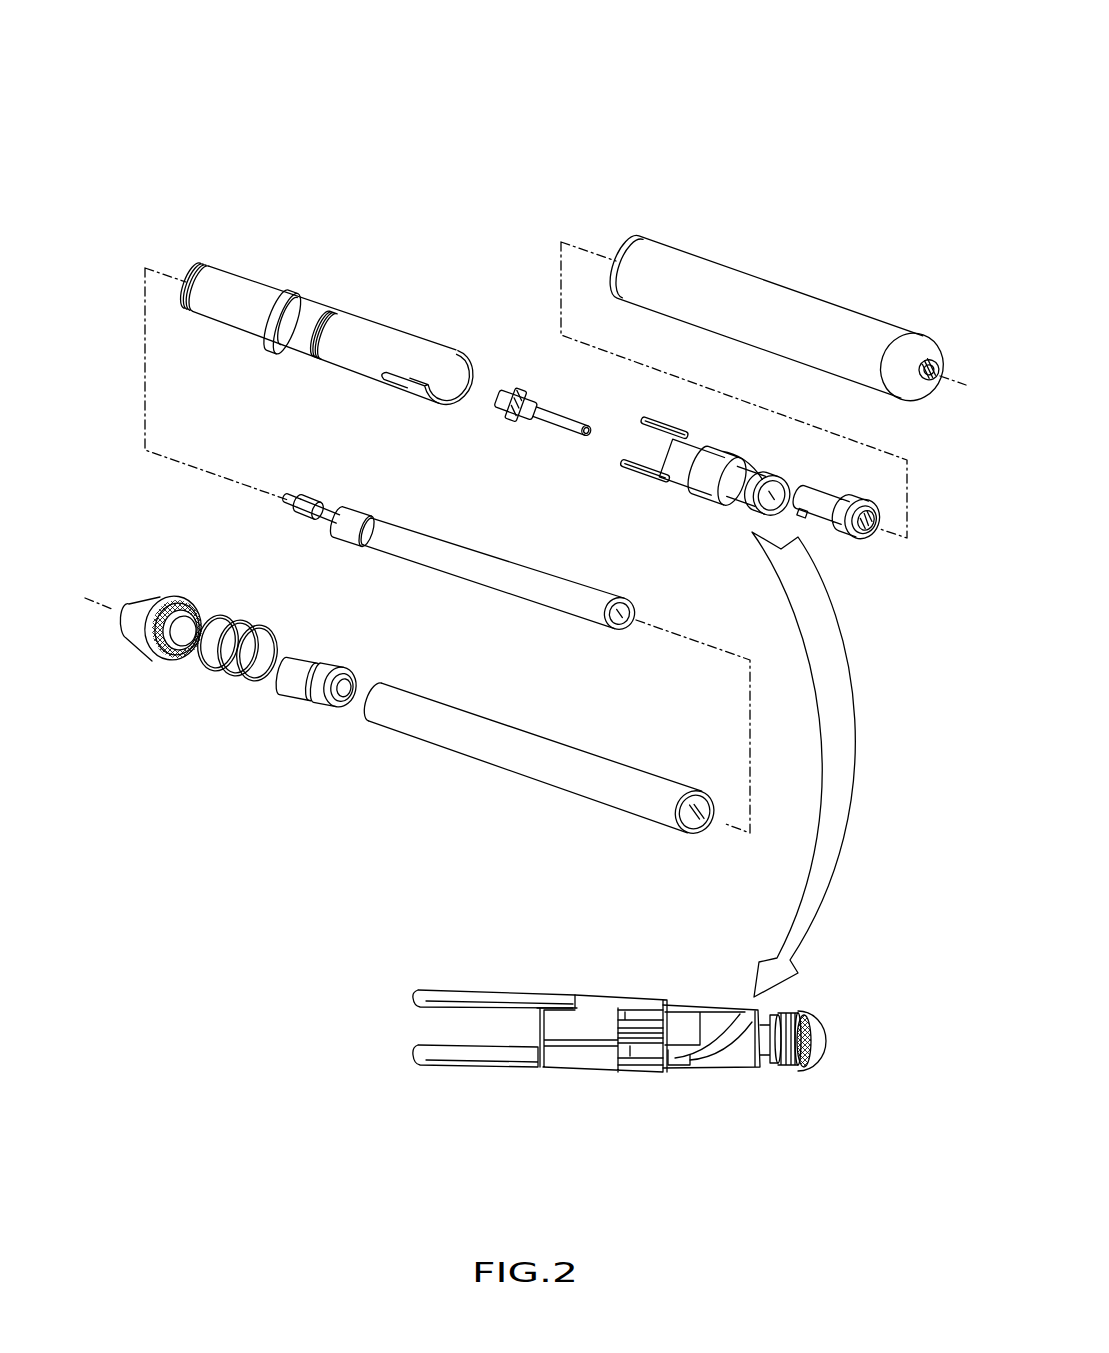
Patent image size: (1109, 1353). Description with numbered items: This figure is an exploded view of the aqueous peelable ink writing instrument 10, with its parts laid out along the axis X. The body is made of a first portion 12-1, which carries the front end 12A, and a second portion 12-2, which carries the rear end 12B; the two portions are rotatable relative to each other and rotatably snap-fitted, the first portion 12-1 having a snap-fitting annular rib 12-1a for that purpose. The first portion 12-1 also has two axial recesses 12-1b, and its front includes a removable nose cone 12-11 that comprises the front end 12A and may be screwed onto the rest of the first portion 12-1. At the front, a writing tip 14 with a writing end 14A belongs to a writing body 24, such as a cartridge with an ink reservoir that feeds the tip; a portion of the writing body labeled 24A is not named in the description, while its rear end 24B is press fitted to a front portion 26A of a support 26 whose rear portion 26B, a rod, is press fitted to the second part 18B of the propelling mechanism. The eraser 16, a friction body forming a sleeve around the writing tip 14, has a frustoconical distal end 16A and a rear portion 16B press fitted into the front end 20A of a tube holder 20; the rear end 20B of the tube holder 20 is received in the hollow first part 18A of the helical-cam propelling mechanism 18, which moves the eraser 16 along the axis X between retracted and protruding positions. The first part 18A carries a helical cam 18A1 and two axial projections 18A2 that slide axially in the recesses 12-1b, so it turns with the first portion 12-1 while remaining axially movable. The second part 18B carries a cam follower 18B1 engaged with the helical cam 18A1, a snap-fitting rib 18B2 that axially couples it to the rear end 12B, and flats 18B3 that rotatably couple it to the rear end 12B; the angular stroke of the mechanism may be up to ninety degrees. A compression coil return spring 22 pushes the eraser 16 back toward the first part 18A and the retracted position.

The aqueous peelable ink writing instrument 10 is at (201, 77).
The first portion 12-1 is at (256, 285).
The snap-fitting annular rib 12-1a is at (313, 298).
The axial recesses 12-1b is at (458, 356).
The second portion 12-2 is at (740, 283).
The first end 12A is at (141, 601).
The second end 12B is at (932, 348).
The nose cone 12-11 is at (135, 650).
The writing tip 14 is at (306, 518).
The writing end 14A is at (288, 496).
The eraser 16 is at (298, 693).
The distal end 16A is at (285, 655).
The rear portion 16B is at (318, 705).
The helical-cam propelling mechanism 18 is at (593, 1078).
The first part 18A is at (690, 492).
The helical cam 18A1 is at (731, 498).
The axial projections 18A2 is at (440, 996).
The second part 18B is at (825, 500).
The cam follower 18B1 is at (807, 527).
The snap-fitting rib 18B2 is at (790, 1068).
The flat 18B3 is at (810, 1068).
The tube holder 20 is at (517, 775).
The front end 20A is at (380, 683).
The rear end 20B is at (682, 790).
The return spring 22 is at (231, 672).
The writing body 24 is at (472, 585).
The flange of shaft 24A is at (345, 507).
The rear end 24B is at (600, 622).
The support 26 is at (542, 415).
The front portion 26A is at (502, 407).
The rear portion 26B is at (570, 430).